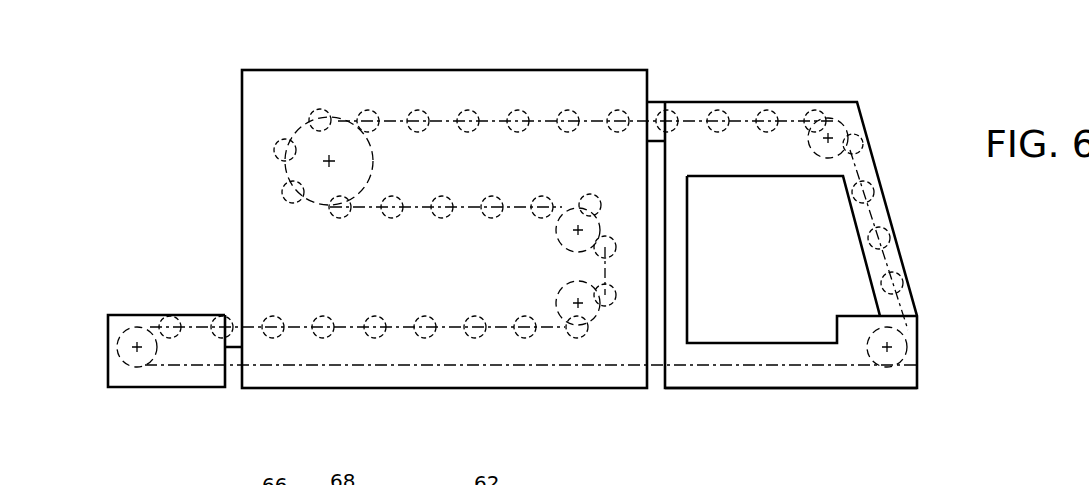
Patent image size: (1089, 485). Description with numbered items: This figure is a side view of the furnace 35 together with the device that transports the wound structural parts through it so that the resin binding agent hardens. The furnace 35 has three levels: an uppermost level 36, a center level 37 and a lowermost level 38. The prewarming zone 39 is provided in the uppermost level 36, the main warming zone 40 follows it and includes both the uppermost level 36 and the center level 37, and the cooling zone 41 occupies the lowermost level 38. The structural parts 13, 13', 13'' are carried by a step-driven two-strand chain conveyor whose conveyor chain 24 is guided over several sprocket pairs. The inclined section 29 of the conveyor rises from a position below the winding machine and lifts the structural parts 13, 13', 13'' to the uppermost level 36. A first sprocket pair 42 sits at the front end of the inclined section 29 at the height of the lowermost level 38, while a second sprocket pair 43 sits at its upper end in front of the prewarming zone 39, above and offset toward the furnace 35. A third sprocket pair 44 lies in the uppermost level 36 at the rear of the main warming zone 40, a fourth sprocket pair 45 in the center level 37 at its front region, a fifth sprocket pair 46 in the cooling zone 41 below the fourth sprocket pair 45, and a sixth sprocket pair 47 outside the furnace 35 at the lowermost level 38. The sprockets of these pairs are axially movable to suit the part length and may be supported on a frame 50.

The furnace 35 is at (618, 60).
The uppermost level 36 is at (212, 102).
The center level 37 is at (212, 178).
The lowermost level 38 is at (96, 282).
The prewarming zone 39 is at (710, 156).
The main warming zone 40 is at (462, 161).
The cooling zone 41 is at (413, 317).
The first sprocket pair 42 is at (903, 352).
The second sprocket pair 43 is at (846, 128).
The third sprocket pair 44 is at (311, 203).
The fourth sprocket pair 45 is at (560, 240).
The fifth sprocket pair 46 is at (560, 296).
The sixth sprocket pair 47 is at (120, 330).
The conveyor chain 24 is at (750, 112).
The inclined section 29 is at (840, 256).
The structural part 13 is at (890, 182).
The structural part 13' is at (907, 228).
The structural part 13'' is at (926, 271).
The frame 50 is at (780, 391).